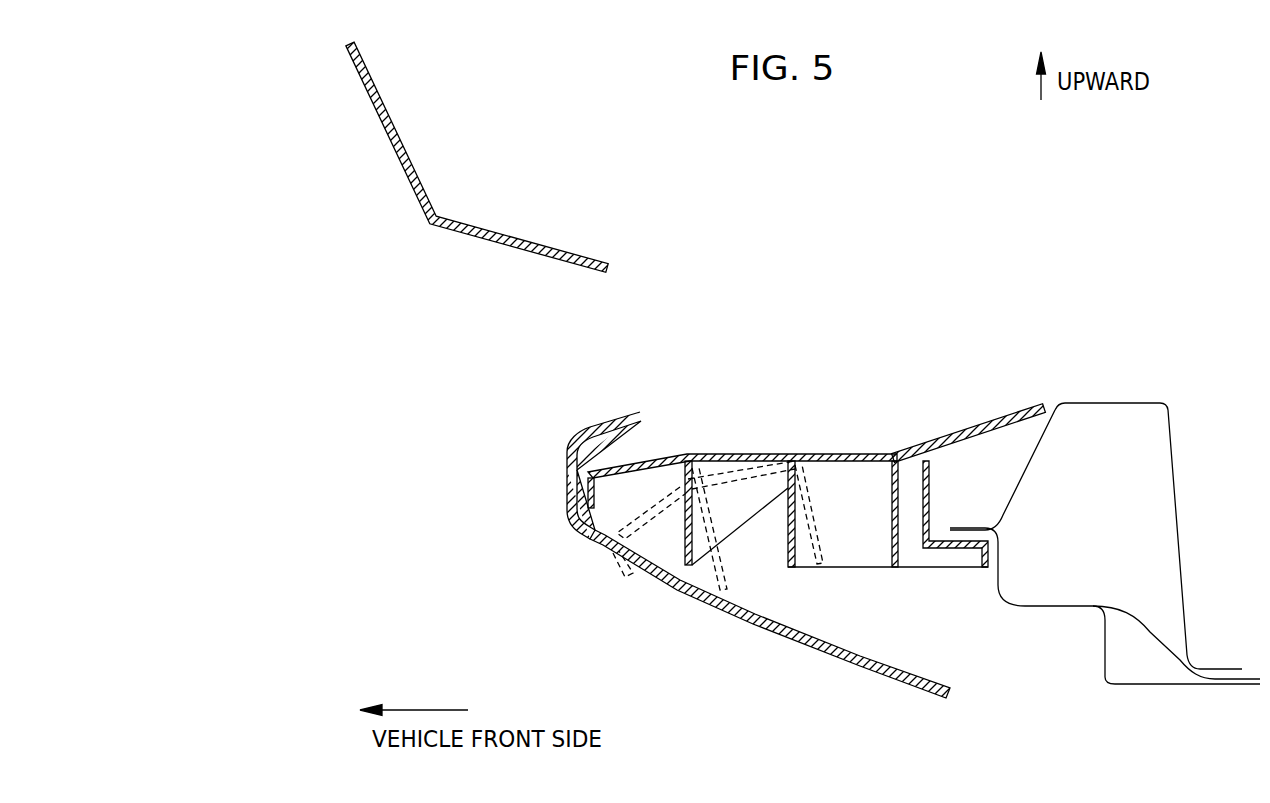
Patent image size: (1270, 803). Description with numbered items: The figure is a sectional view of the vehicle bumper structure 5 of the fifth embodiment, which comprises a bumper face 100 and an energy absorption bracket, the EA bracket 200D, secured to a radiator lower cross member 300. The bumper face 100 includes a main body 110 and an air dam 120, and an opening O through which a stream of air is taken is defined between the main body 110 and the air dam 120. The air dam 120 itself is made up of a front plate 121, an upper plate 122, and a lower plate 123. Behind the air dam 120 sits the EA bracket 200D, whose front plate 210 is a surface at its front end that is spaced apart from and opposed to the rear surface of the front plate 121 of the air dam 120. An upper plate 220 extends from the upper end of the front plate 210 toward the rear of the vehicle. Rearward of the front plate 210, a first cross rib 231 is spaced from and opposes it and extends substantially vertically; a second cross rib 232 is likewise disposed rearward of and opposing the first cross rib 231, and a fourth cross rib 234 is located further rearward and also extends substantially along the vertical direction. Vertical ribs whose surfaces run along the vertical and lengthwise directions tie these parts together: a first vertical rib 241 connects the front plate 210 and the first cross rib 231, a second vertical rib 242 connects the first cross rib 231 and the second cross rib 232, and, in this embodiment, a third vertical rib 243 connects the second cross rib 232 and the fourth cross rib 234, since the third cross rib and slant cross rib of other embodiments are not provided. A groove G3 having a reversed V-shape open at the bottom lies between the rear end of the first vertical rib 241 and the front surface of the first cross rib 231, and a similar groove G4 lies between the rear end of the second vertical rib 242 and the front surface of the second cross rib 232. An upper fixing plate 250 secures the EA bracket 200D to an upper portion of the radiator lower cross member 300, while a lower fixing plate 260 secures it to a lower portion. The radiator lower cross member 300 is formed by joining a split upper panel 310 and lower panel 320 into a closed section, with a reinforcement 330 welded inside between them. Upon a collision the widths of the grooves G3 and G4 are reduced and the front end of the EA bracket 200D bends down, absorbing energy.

The vehicle bumper structure 5 is at (337, 98).
The bumper face 100 is at (302, 257).
The main body 110 is at (402, 202).
The air dam 120 is at (551, 437).
The front plate 121 is at (572, 456).
The upper plate 122 is at (603, 428).
The lower plate 123 is at (856, 668).
The opening O is at (609, 346).
The EA bracket 200D is at (795, 374).
The front plate 210 is at (589, 492).
The upper plate 220 is at (735, 454).
The first cross rib 231 is at (684, 480).
The second cross rib 232 is at (788, 486).
The fourth cross rib 234 is at (902, 545).
The first vertical rib 241 is at (632, 516).
The second vertical rib 242 is at (727, 523).
The third vertical rib 243 is at (837, 552).
The upper fixing plate 250 is at (995, 410).
The lower fixing plate 260 is at (961, 548).
The groove G3 is at (668, 527).
The groove G4 is at (762, 535).
The radiator lower cross member 300 is at (1173, 393).
The upper panel 310 is at (1103, 402).
The lower panel 320 is at (1141, 686).
The reinforcement 330 is at (1147, 616).